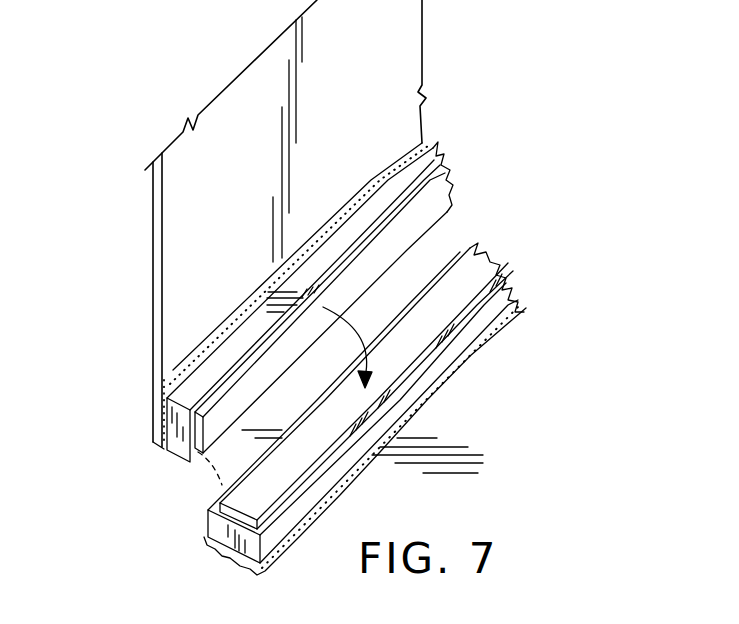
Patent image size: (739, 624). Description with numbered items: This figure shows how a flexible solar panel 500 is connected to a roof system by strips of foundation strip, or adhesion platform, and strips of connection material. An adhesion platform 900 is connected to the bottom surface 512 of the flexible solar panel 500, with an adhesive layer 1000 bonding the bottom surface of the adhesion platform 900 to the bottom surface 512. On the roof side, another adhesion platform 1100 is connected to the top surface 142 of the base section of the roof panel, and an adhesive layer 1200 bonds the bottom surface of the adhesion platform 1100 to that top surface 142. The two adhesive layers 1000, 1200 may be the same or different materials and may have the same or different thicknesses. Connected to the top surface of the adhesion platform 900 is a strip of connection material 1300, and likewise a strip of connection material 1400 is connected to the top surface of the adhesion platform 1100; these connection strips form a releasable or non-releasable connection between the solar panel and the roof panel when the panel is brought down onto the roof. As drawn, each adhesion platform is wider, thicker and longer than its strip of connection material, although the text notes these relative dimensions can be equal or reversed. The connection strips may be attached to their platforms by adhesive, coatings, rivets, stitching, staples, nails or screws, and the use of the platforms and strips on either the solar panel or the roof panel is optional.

The flexible solar panel 500 is at (136, 232).
The bottom surface 512 is at (400, 52).
The adhesive layer 1000 is at (385, 172).
The adhesion platform 900 is at (410, 173).
The strip of connection material 1300 is at (417, 223).
The strip of connection material 1400 is at (498, 262).
The adhesion platform 1100 is at (498, 317).
The adhesive layer 1200 is at (480, 357).
The top surface 142 is at (440, 448).